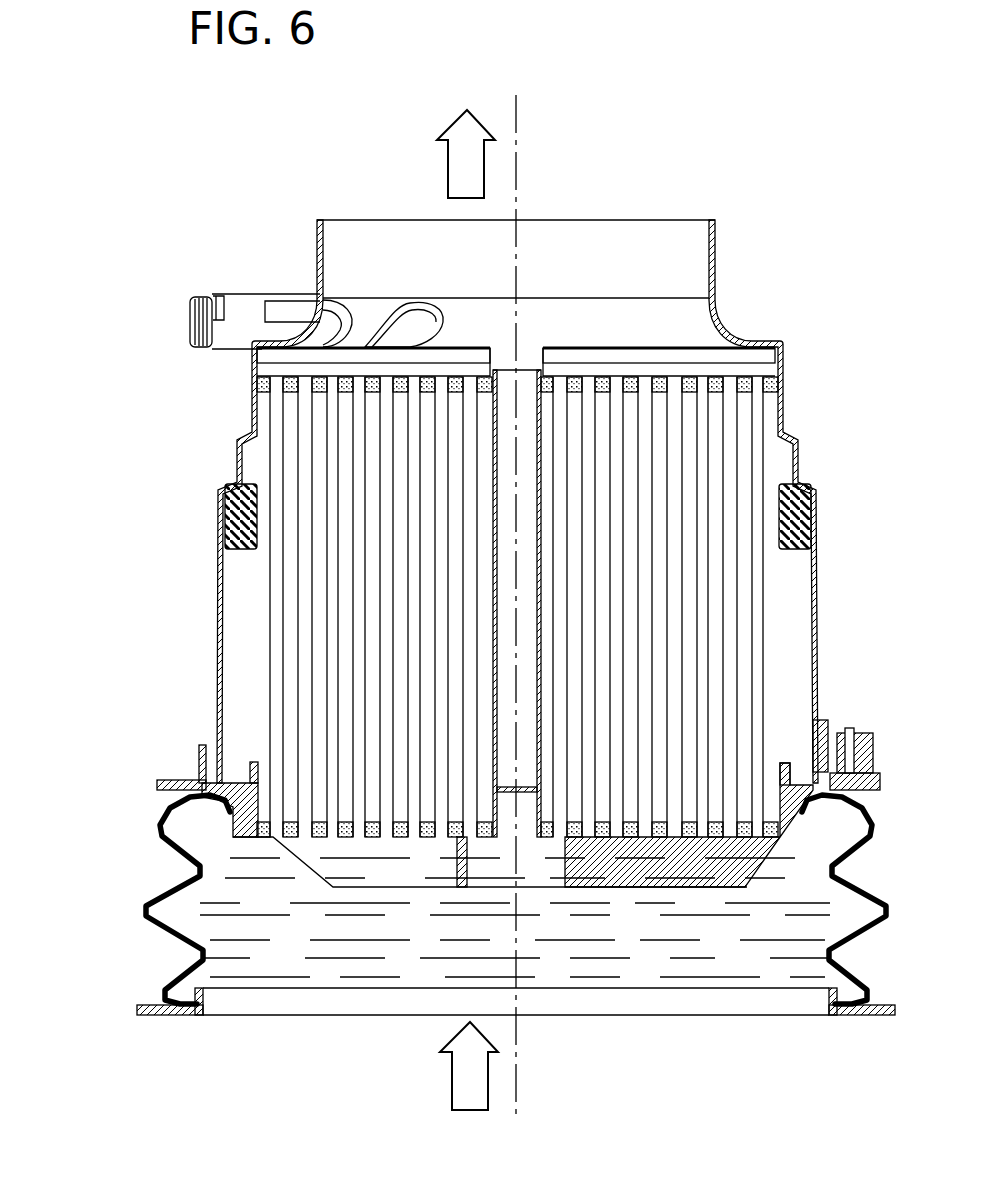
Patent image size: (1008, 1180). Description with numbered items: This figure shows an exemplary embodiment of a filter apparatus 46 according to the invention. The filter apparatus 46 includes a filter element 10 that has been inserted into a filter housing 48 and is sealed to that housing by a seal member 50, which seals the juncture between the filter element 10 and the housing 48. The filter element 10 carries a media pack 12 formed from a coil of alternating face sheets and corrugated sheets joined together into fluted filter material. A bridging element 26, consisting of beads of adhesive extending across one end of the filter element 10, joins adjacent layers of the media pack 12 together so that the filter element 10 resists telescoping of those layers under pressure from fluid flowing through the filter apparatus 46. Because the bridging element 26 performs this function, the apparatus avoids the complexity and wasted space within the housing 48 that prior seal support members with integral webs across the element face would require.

The filter apparatus 46 is at (137, 162).
The filter element 10 is at (780, 566).
The media pack 12 is at (302, 680).
The bridging element 26 is at (707, 363).
The filter housing 48 is at (218, 608).
The seal member 50 is at (232, 502).